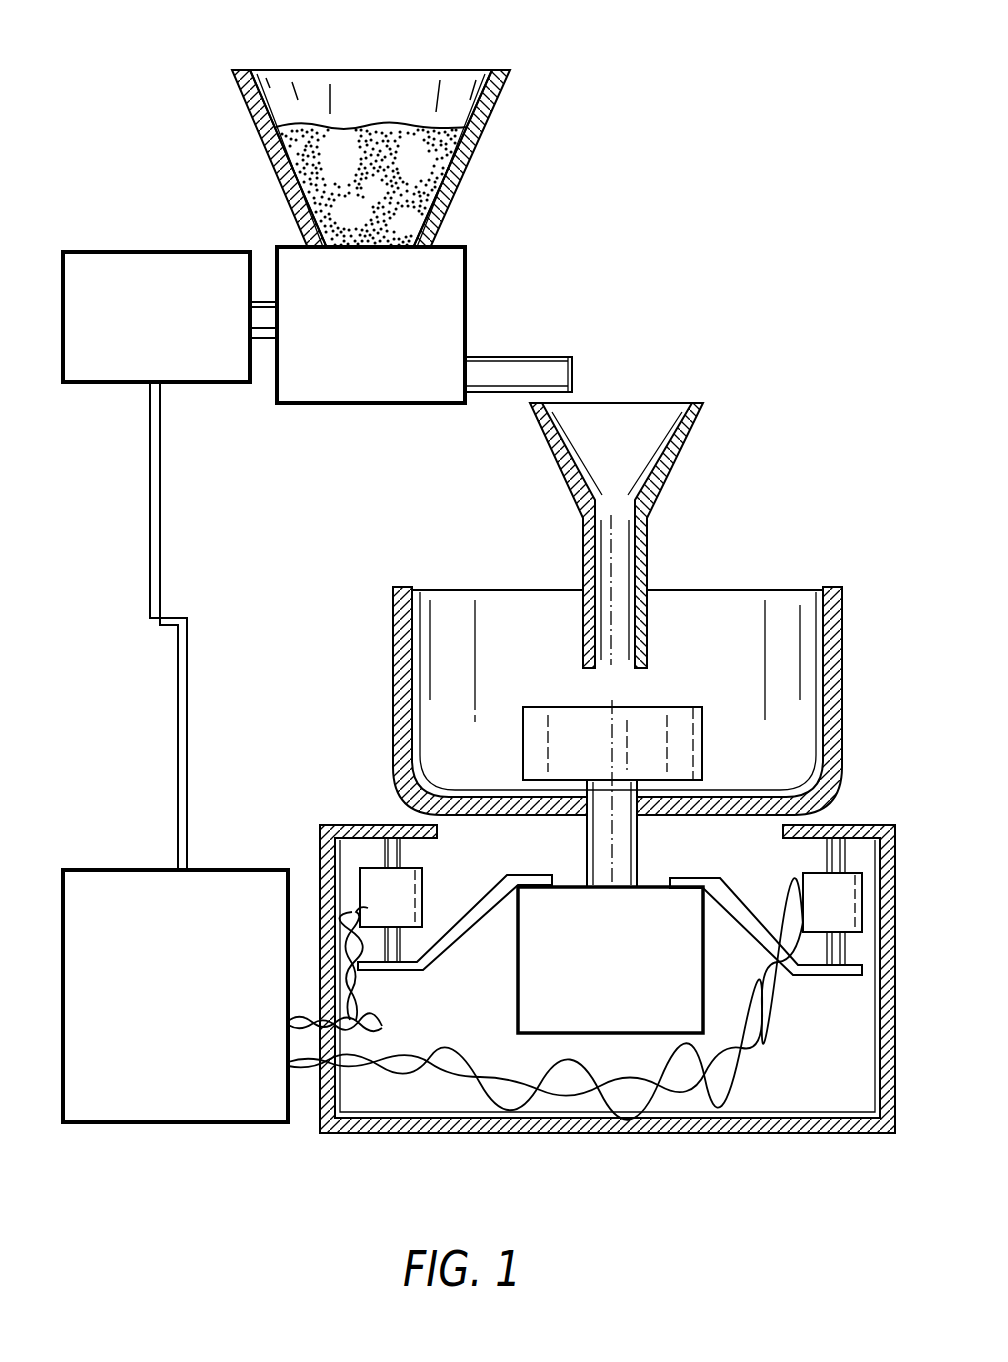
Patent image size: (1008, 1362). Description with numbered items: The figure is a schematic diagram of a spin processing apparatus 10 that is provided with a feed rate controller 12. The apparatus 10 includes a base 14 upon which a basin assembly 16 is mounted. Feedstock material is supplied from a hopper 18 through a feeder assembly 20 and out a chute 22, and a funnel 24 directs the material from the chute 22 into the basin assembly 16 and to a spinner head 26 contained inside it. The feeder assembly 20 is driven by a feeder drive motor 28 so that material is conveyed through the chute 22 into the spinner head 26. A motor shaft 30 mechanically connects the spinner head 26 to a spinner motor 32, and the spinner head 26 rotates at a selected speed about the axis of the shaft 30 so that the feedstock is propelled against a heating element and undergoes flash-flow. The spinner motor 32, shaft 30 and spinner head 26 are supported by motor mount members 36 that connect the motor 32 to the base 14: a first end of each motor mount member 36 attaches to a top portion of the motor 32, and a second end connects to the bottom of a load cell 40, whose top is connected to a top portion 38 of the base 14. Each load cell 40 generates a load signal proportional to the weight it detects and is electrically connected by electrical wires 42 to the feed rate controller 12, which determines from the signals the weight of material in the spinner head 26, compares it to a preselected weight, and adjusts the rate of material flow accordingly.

The spin processing apparatus 10 is at (622, 220).
The feed rate controller 12 is at (148, 1103).
The base 14 is at (730, 1125).
The basin assembly 16 is at (505, 645).
The hopper 18 is at (402, 100).
The feeder assembly 20 is at (375, 378).
The chute 22 is at (536, 373).
The funnel 24 is at (613, 440).
The spinner head 26 is at (693, 745).
The feeder drive motor 28 is at (202, 365).
The motor shaft 30 is at (600, 852).
The spinner motor 32 is at (613, 1015).
The motor mount member 36 is at (471, 938).
The top portion of base 38 is at (445, 838).
The load cell 40 is at (397, 905).
The electrical wires 42 is at (423, 1062).